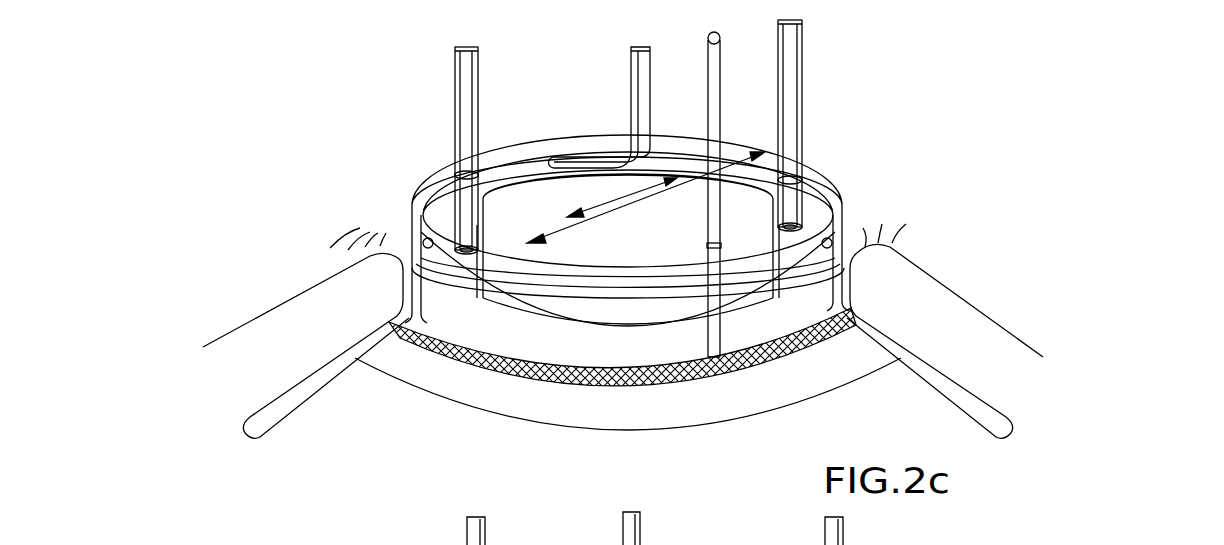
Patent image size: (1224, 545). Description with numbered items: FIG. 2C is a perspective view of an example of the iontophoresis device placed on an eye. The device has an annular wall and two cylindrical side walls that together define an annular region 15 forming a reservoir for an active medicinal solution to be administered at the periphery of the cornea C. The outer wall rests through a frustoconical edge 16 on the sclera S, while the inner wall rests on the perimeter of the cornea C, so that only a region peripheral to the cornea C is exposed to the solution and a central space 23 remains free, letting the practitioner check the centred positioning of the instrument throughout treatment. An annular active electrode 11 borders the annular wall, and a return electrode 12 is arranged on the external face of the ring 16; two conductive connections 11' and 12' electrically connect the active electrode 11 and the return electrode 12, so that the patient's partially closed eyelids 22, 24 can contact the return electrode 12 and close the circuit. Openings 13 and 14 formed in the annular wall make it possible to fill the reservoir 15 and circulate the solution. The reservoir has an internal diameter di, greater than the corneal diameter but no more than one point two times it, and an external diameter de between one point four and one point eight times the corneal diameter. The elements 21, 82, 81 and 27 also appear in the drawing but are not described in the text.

The annular active electrode 11 is at (627, 210).
The conductive connection 11' is at (630, 107).
The return electrode 12 is at (628, 419).
The conductive connection 12' is at (741, 183).
The opening 13 is at (456, 110).
The opening 14 is at (802, 108).
The annular region 15 is at (430, 287).
The frustoconical edge 16 is at (846, 380).
The inner cylinder 21 is at (599, 330).
The eyelid 22 is at (907, 277).
The central space 23 is at (604, 180).
The eyelid 24 is at (337, 297).
The cornea C is at (577, 277).
The sclera S is at (402, 445).
The external diameter de is at (752, 160).
The internal diameter di is at (662, 177).
The pin 82 is at (485, 524).
The pin 81 is at (640, 538).
The pin 27 is at (758, 544).